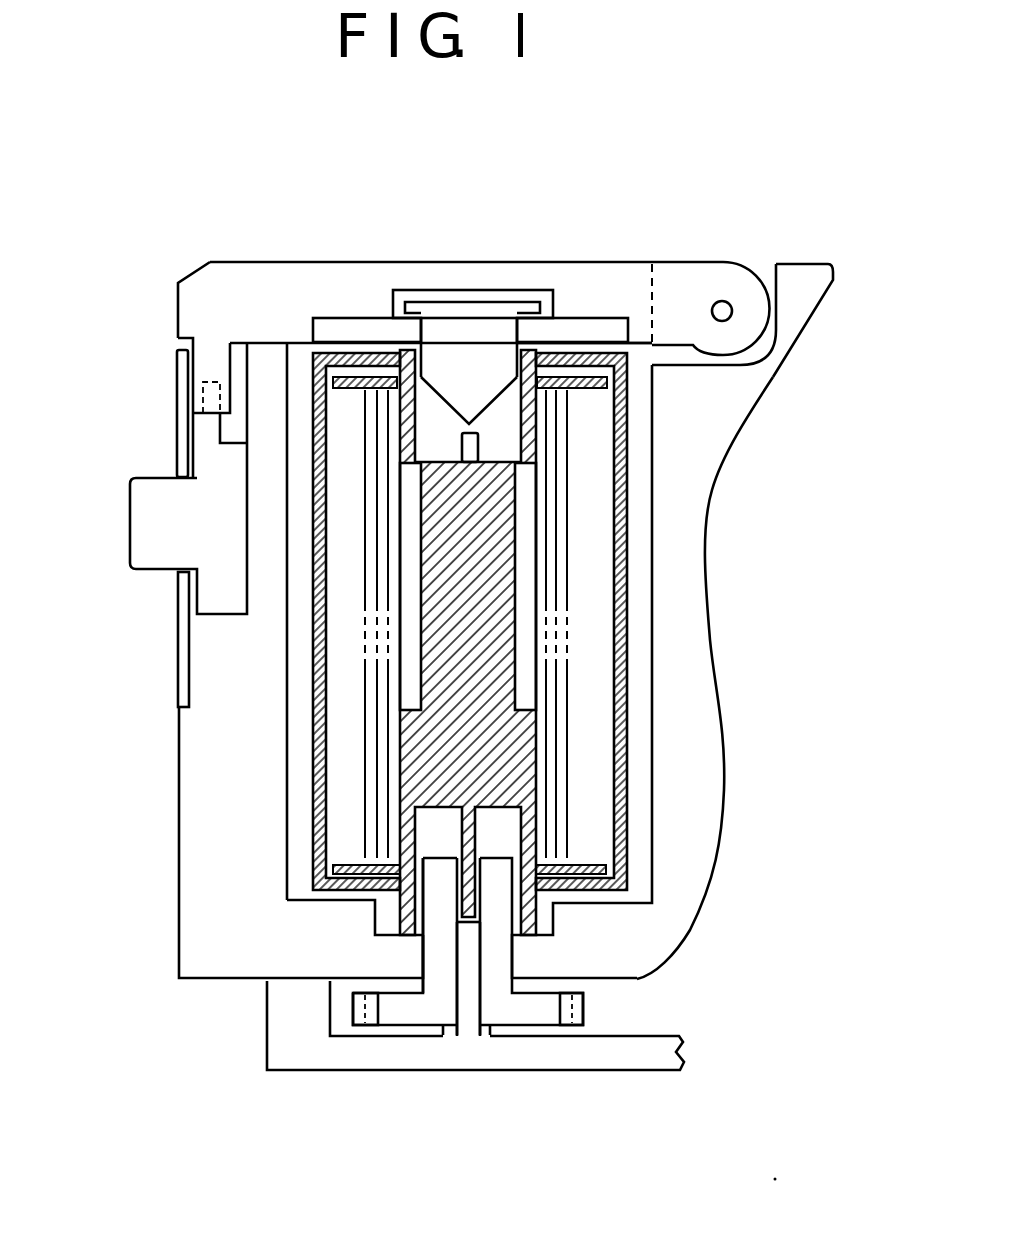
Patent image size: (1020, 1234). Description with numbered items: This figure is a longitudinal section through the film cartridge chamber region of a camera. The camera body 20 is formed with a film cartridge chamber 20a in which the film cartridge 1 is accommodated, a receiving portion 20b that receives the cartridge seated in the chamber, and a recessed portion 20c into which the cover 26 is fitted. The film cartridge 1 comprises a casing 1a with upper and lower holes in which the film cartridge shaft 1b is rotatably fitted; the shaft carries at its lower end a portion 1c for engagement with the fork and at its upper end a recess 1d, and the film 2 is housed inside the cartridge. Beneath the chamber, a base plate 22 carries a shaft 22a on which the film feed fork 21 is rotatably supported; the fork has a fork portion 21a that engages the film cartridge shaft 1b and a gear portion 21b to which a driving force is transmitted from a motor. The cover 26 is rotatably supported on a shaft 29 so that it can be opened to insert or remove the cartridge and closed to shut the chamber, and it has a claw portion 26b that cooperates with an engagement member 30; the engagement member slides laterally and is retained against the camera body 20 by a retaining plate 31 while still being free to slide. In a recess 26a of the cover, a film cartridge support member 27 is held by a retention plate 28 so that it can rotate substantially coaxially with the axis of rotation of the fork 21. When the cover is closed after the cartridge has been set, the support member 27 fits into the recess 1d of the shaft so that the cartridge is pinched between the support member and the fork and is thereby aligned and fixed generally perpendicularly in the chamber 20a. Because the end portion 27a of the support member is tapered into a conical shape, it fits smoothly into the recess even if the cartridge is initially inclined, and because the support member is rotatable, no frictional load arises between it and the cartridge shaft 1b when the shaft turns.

The film cartridge 1 is at (474, 539).
The casing 1a is at (630, 632).
The film cartridge shaft 1b is at (485, 753).
The portion for engagement with fork 1c is at (503, 832).
The recess 1d is at (490, 408).
The film 2 is at (565, 738).
The camera body 20 is at (703, 480).
The film cartridge chamber 20a is at (640, 557).
The receiving portion 20b is at (377, 916).
The recessed portion 20c is at (770, 264).
The film feed fork 21 is at (507, 1008).
The fork portion 21a is at (438, 888).
The gear portion 21b is at (585, 1010).
The base plate 22 is at (626, 1057).
The shaft 22a is at (468, 993).
The cover 26 is at (643, 275).
The recess 26a is at (535, 358).
The claw portion 26b is at (207, 360).
The film cartridge support member 27 is at (443, 307).
The end portion 27a is at (463, 395).
The retention plate 28 is at (330, 320).
The shaft 29 is at (717, 300).
The engagement member 30 is at (150, 512).
The retaining plate 31 is at (175, 641).